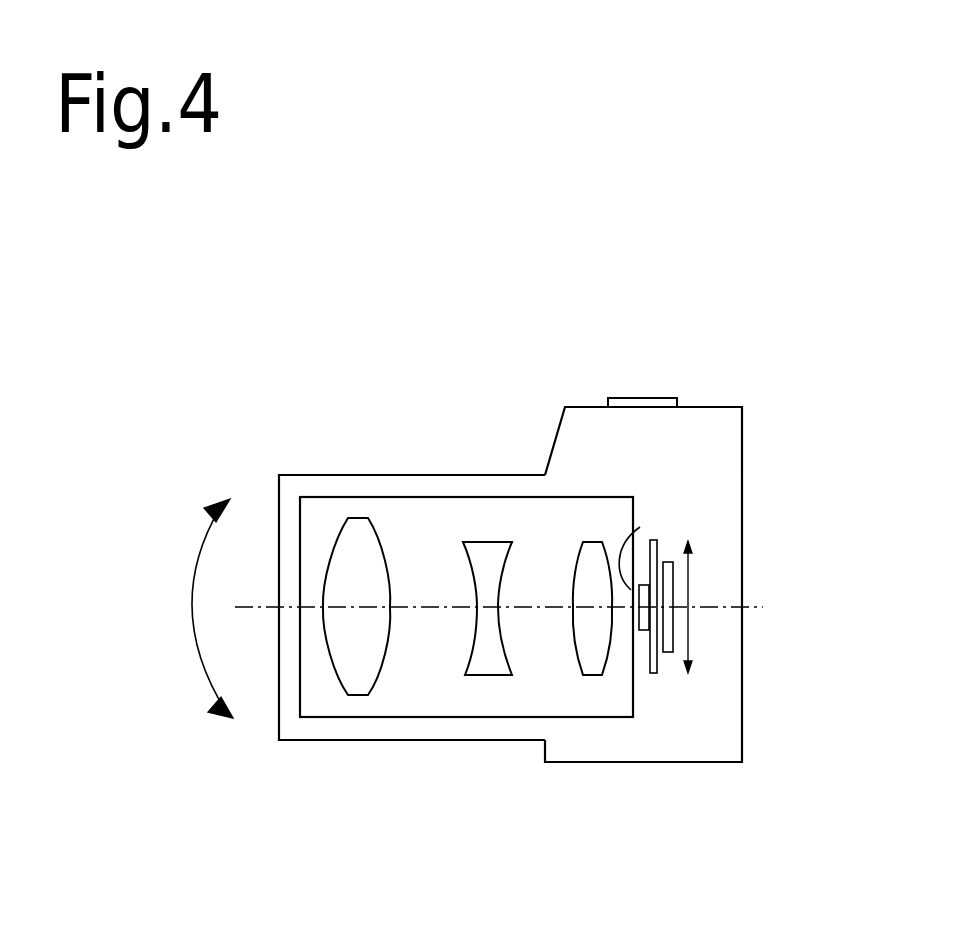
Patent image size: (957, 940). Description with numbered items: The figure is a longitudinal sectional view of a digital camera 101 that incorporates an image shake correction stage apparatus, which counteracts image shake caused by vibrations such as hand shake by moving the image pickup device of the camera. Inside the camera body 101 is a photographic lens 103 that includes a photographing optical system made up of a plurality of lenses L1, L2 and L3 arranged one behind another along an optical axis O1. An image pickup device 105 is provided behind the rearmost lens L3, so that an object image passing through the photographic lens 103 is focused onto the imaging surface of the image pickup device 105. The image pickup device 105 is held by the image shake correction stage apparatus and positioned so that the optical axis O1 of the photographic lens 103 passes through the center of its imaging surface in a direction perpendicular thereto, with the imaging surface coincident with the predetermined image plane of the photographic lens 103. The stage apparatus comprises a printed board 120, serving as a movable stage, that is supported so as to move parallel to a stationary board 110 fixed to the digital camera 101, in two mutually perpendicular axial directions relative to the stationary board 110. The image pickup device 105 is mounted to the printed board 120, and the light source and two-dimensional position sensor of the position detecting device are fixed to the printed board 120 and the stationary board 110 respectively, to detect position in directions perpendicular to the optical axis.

The digital camera 101 is at (745, 375).
The photographic lens 103 is at (508, 740).
The image pickup device 105 is at (640, 527).
The stationary board 110 is at (653, 673).
The printed board 120 is at (665, 592).
The lens L1 is at (346, 518).
The lens L2 is at (488, 542).
The lens L3 is at (592, 542).
The optical axis O1 is at (423, 608).